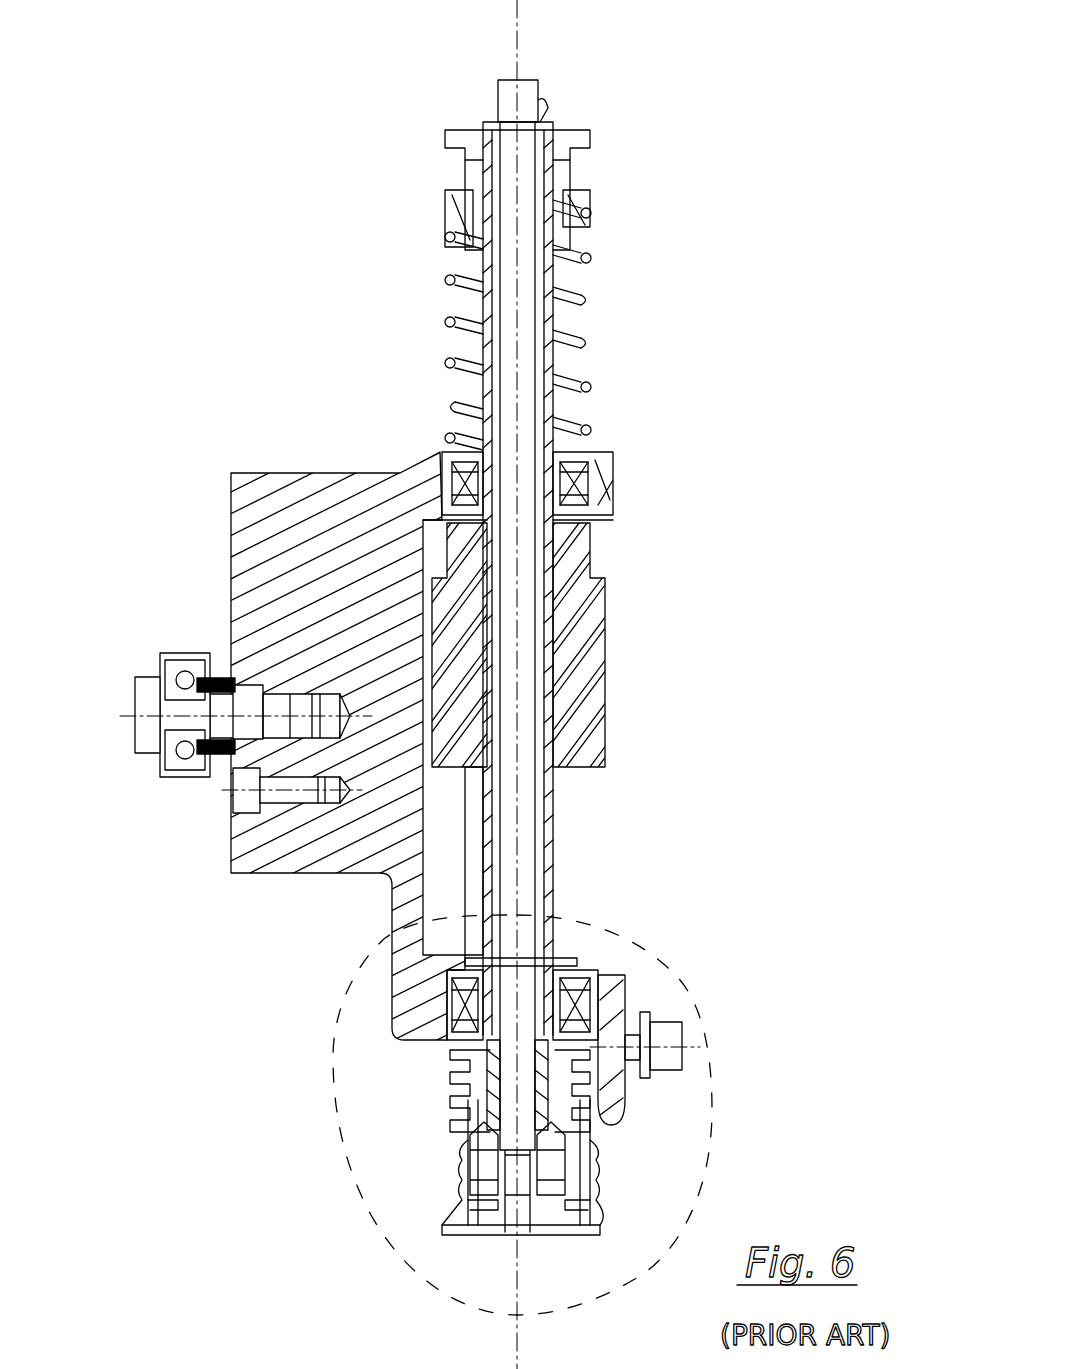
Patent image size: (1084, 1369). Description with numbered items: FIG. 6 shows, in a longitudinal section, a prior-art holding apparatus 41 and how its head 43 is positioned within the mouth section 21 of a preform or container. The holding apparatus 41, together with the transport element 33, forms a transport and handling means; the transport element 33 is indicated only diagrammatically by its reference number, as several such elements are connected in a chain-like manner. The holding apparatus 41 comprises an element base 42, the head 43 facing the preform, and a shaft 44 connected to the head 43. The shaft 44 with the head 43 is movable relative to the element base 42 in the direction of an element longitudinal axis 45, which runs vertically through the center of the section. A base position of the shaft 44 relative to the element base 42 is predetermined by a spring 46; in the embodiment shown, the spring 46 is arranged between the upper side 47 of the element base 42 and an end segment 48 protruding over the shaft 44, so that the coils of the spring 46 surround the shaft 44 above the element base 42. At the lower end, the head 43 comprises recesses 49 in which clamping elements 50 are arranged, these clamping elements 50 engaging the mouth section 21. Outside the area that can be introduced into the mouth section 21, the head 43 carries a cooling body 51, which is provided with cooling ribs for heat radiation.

The mouth section 21 is at (600, 1183).
The transport element 33 is at (205, 328).
The holding apparatus 41 is at (708, 698).
The element base 42 is at (300, 868).
The head 43 is at (545, 1212).
The shaft 44 is at (540, 900).
The element longitudinal axis 45 is at (522, 308).
The spring 46 is at (586, 258).
The upper side 47 is at (605, 452).
The end segment 48 is at (450, 190).
The recesses 49 is at (485, 1237).
The clamping elements 50 is at (455, 1150).
The cooling body 51 is at (448, 1075).